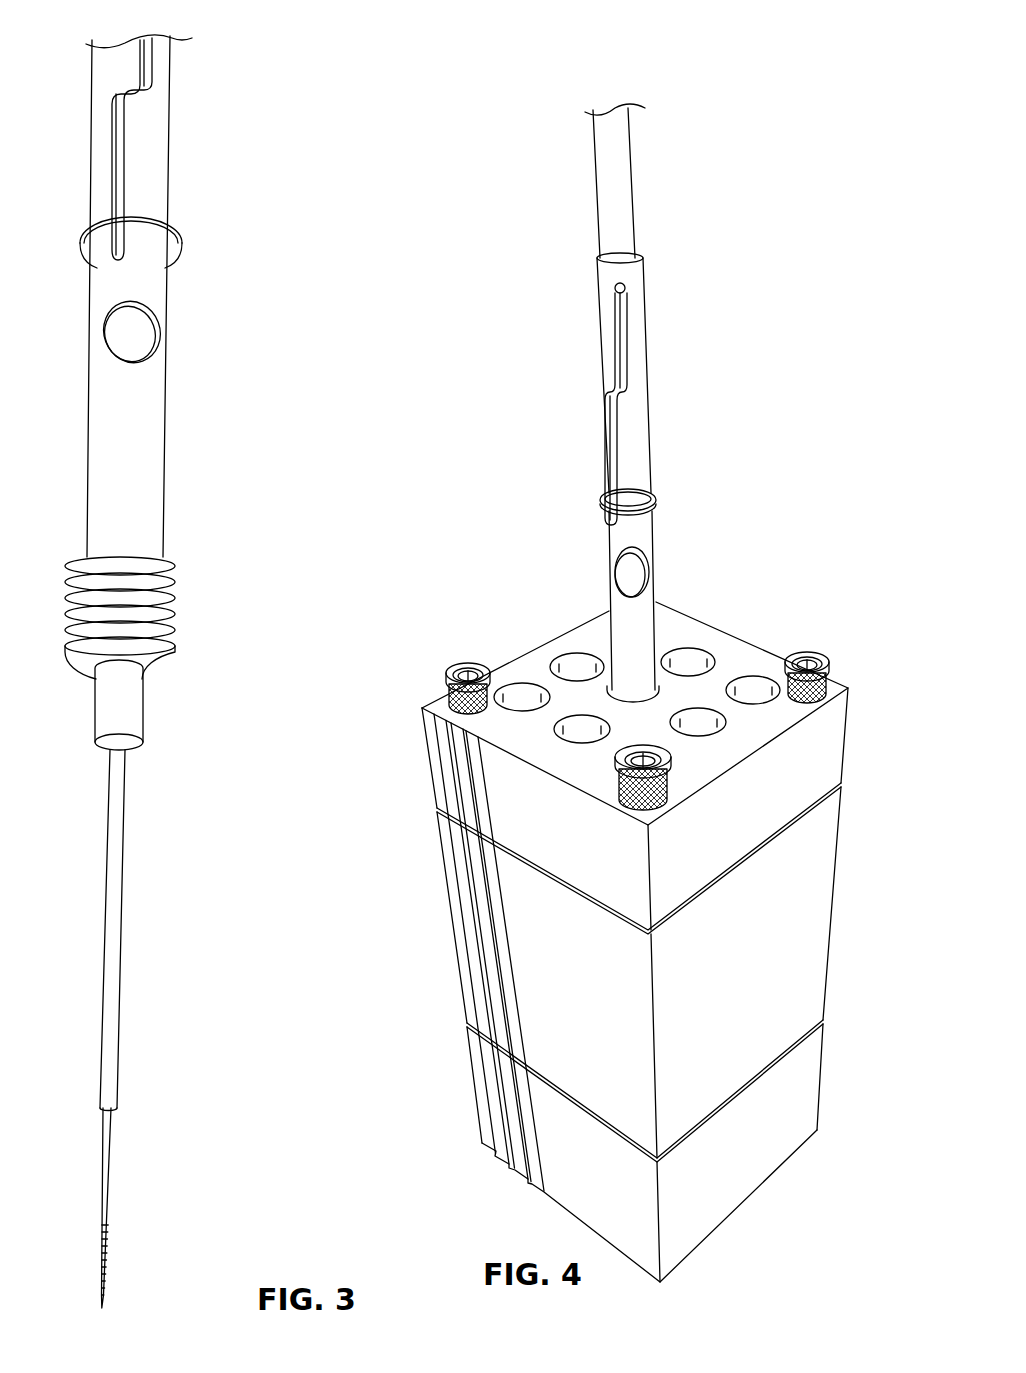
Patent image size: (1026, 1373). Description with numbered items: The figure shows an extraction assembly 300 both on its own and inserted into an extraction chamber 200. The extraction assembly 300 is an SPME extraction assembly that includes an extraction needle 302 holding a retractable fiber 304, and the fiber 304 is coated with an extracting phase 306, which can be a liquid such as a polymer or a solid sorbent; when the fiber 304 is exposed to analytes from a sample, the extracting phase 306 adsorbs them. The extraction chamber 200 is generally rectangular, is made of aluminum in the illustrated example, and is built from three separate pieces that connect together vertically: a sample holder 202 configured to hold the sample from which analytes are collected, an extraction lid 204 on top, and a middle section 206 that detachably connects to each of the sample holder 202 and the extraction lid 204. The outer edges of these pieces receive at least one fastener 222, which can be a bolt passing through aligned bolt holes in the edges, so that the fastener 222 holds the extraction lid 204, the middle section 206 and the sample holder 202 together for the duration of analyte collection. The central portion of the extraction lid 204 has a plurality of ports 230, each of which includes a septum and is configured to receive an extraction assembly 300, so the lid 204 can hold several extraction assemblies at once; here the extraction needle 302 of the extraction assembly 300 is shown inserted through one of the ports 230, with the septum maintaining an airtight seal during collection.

In FIG. 3, the extraction assembly 300 is at (272, 46).
In FIG. 4, the extraction assembly 300 is at (680, 265).
In FIG. 3, the extraction needle 302 is at (124, 840).
In FIG. 3, the retractable fiber 304 is at (110, 1180).
In FIG. 3, the extracting phase 306 is at (118, 1278).
In FIG. 4, the extraction chamber 200 is at (618, 934).
In FIG. 4, the sample holder 202 is at (822, 1075).
In FIG. 4, the extraction lid 204 is at (848, 735).
In FIG. 4, the middle section 206 is at (838, 910).
In FIG. 4, the fastener 222 is at (466, 663).
In FIG. 4, the port 230 is at (573, 660).